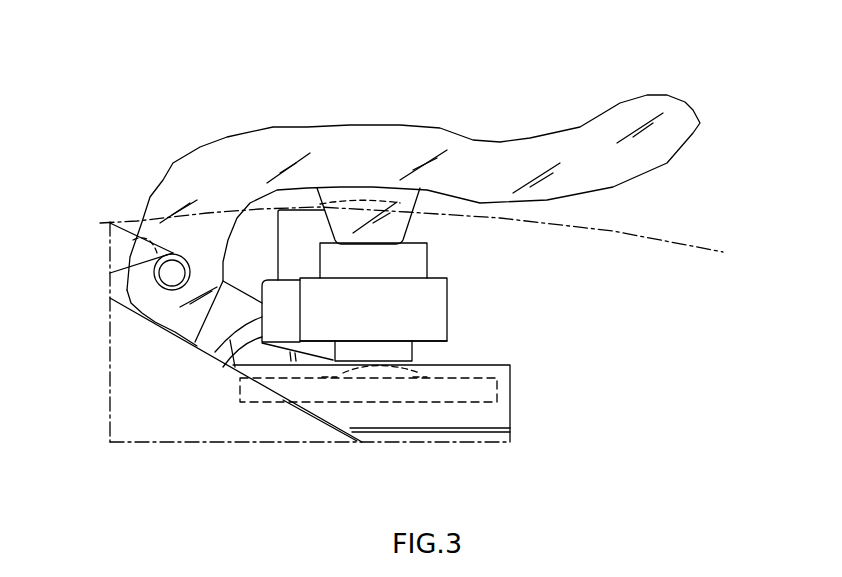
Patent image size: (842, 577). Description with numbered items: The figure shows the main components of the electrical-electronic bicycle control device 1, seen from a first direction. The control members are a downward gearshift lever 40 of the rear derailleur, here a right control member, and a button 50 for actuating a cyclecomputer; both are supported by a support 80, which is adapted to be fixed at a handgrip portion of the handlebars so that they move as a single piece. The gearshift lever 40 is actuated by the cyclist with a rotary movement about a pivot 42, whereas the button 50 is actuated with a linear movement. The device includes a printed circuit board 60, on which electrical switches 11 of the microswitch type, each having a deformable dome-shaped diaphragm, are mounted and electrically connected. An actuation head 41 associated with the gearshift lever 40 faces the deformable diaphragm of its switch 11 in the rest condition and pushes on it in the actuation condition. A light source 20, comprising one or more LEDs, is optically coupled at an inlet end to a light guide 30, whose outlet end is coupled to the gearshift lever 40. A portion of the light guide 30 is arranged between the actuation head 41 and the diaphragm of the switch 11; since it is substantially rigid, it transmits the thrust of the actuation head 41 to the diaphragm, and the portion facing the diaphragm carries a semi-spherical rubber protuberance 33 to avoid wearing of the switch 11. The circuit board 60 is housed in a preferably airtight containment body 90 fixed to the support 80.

The bicycle control device 1 is at (110, 78).
The electrical switch 11 is at (377, 367).
The light source 20 is at (400, 353).
The light guide 30 is at (383, 308).
The semi-spherical protuberance 33 is at (400, 342).
The gearshift lever 40 is at (587, 148).
The actuation head 41 is at (407, 221).
The pivot 42 is at (110, 294).
The button 50 is at (293, 246).
The printed circuit board 60 is at (497, 384).
The support 80 is at (148, 387).
The containment body 90 is at (495, 418).